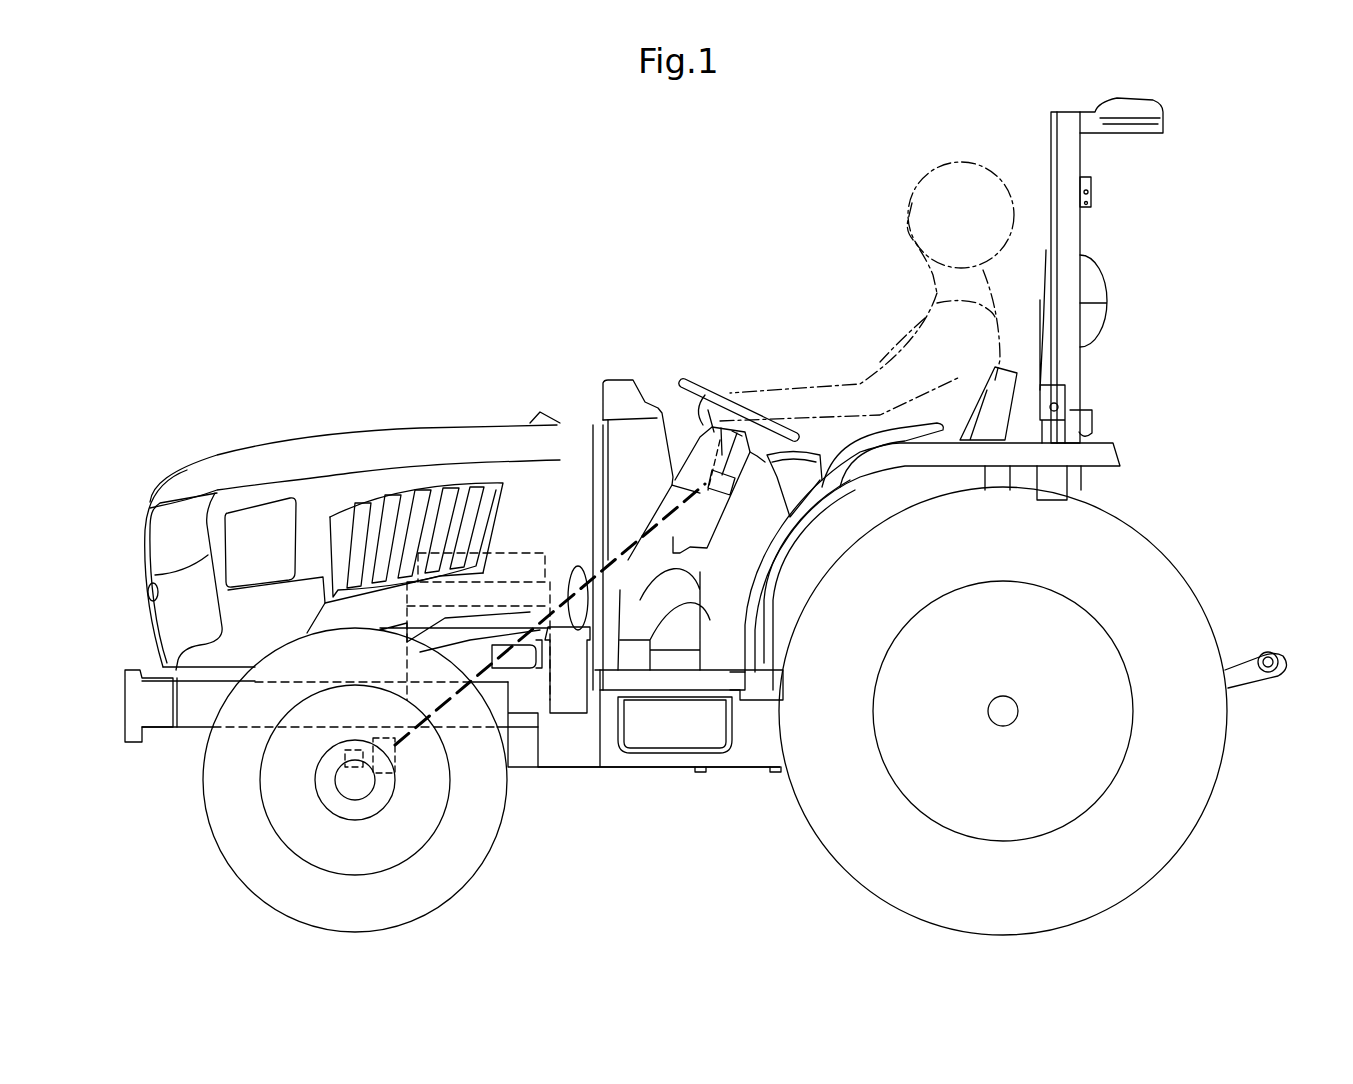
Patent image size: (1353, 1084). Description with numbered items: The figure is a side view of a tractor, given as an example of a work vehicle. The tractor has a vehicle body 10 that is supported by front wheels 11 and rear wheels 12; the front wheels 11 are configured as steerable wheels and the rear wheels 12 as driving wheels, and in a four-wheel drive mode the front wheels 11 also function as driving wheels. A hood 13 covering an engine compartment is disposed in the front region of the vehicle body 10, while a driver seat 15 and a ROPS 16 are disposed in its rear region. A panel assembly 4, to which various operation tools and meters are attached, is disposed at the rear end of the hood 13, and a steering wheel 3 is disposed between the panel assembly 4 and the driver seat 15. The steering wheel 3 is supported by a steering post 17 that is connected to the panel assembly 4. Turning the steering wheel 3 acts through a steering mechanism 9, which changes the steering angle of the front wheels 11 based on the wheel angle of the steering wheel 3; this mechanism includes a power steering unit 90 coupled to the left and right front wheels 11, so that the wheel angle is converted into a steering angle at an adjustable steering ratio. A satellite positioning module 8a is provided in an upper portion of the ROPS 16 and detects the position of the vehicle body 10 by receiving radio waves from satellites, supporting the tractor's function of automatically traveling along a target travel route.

The steering wheel 3 is at (693, 388).
The panel assembly 4 is at (630, 440).
The satellite positioning module 8a is at (1125, 102).
The steering mechanism 9 is at (630, 547).
The vehicle body 10 is at (584, 776).
The front wheels 11 is at (458, 840).
The rear wheels 12 is at (1166, 822).
The hood 13 is at (267, 460).
The driver seat 15 is at (1000, 372).
The ROPS 16 is at (1060, 197).
The steering post 17 is at (737, 497).
The power steering unit 90 is at (400, 760).